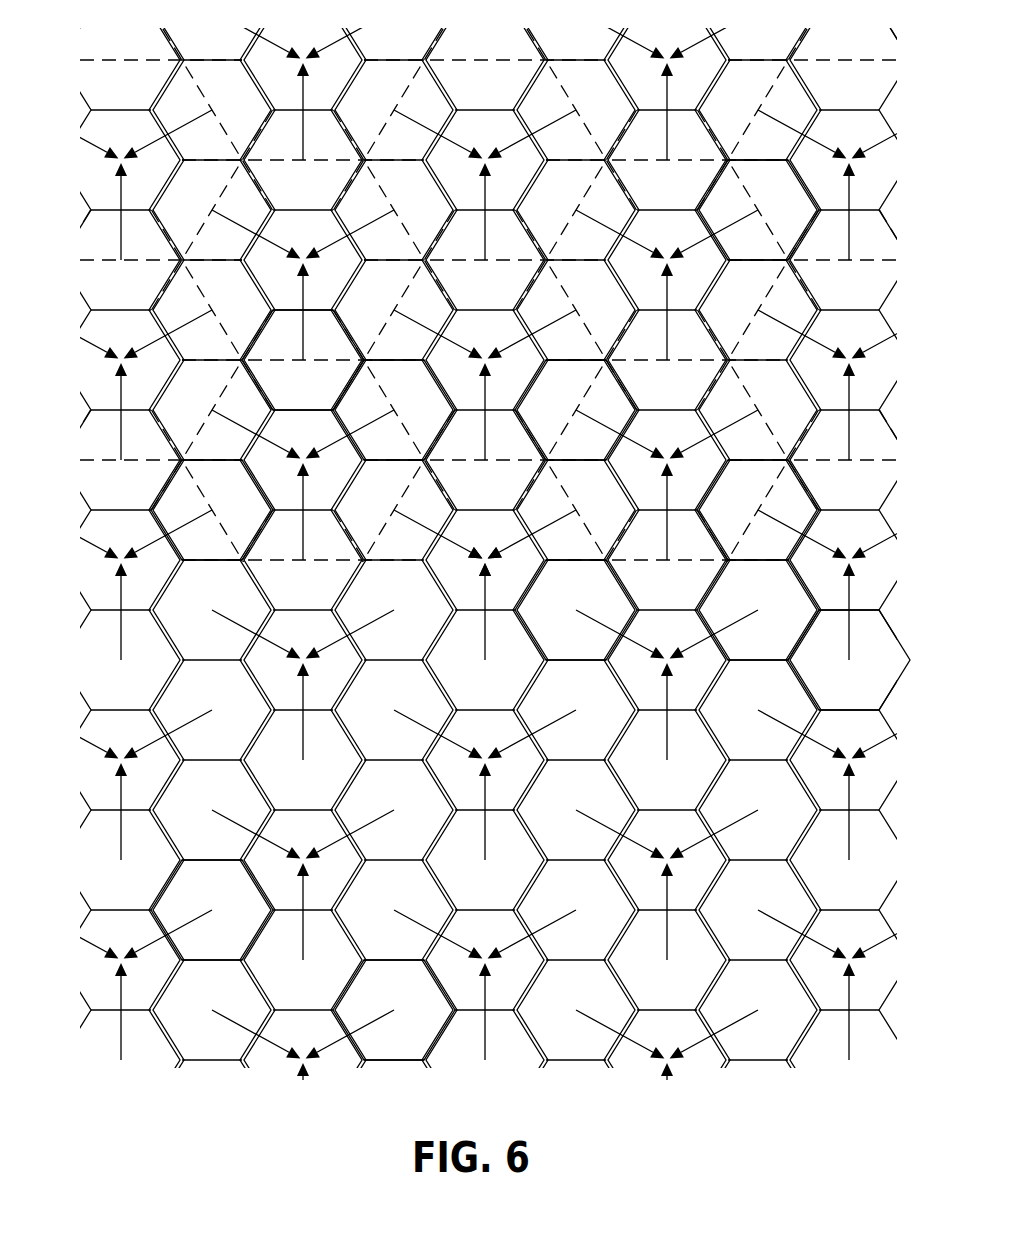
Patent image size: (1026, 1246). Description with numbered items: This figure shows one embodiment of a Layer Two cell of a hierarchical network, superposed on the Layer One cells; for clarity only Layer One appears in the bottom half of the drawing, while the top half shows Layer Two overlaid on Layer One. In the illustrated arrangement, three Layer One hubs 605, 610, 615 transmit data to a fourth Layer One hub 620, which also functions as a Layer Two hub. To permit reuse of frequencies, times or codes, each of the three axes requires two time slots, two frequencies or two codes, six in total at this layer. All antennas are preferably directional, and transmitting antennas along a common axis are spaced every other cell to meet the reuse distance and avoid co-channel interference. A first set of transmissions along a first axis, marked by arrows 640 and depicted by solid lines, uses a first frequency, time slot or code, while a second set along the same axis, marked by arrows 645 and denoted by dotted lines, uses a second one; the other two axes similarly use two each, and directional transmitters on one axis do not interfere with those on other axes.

The Layer 1 hub 605 is at (535, 534).
The Layer 1 hub 610 is at (482, 632).
The Layer 1 hub 615 is at (420, 521).
The fourth Layer 1 hub 620 is at (483, 549).
The arrows 640 is at (485, 685).
The arrows 645 is at (530, 560).